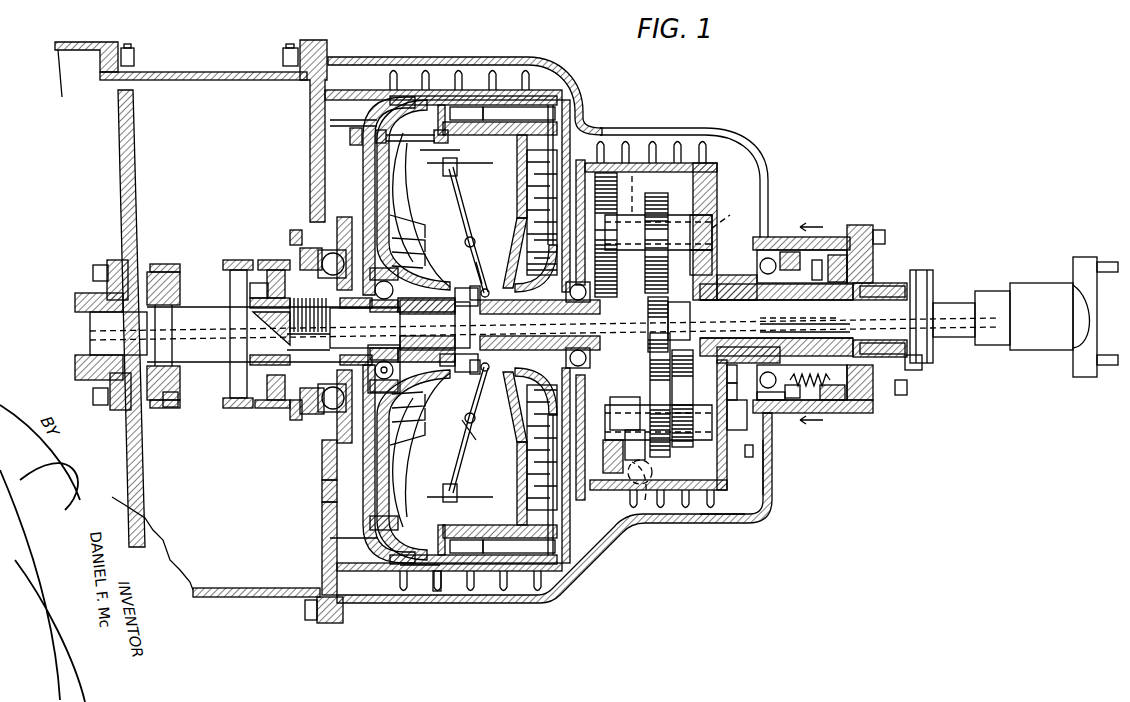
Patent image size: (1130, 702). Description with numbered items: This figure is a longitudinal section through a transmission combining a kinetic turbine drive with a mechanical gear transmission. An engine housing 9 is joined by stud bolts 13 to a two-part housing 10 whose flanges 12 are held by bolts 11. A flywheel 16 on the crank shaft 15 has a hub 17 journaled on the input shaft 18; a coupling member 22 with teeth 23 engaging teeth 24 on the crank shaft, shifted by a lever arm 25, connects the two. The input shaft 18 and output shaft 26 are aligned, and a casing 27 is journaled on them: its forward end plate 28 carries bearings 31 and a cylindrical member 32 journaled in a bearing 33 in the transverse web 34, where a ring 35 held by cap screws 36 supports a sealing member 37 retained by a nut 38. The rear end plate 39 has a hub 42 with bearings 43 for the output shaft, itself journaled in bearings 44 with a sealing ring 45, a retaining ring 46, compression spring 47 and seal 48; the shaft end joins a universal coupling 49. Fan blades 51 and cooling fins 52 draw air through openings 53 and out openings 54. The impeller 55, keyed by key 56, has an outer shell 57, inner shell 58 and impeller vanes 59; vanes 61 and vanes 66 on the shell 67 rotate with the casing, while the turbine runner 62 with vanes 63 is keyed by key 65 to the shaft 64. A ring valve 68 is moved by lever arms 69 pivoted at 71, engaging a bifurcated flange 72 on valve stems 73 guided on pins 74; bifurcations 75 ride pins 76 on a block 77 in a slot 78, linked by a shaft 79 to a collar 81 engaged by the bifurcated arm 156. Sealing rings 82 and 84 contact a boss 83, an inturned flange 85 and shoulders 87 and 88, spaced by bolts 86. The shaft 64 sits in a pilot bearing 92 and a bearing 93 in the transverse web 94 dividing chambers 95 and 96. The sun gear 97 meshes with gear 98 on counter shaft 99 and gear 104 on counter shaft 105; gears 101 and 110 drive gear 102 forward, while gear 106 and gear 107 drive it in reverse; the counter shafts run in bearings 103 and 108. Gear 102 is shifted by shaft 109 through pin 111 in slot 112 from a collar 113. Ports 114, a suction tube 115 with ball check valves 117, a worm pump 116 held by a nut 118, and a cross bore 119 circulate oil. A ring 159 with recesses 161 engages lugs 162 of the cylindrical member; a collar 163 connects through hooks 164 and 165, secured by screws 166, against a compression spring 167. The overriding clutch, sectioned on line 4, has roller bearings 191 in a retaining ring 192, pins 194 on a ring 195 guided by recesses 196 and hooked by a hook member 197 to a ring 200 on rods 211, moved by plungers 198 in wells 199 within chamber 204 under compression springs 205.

The engine housing 9 is at (87, 42).
The housing 10 is at (180, 72).
The bolts 11 is at (290, 48).
The flanges 12 is at (313, 40).
The stud bolts 13 is at (134, 48).
The crank shaft 15 is at (80, 295).
The flywheel 16 is at (134, 190).
The hub 17 is at (118, 260).
The input shaft 18 is at (200, 365).
The coupling member 22 is at (176, 285).
The teeth 23 is at (150, 405).
The teeth 24 is at (93, 272).
The lever arm 25 is at (173, 407).
The output shaft 26 is at (962, 303).
The casing 27 is at (590, 566).
The forward end plate 28 is at (382, 604).
The bearings 31 is at (375, 392).
The cylindrical member 32 is at (366, 430).
The bearing 33 is at (338, 440).
The transverse web 34 is at (325, 470).
The ring 35 is at (320, 415).
The cap screws 36 is at (292, 232).
The sealing member 37 is at (305, 410).
The nut 38 is at (290, 410).
The rear end plate 39 is at (750, 518).
The hub 42 is at (855, 322).
The bearings 43 is at (726, 306).
The bearings 44 is at (763, 240).
The sealing ring 45 is at (880, 283).
The retaining ring 46 is at (922, 365).
The compression spring 47 is at (896, 300).
The seal 48 is at (892, 288).
The universal coupling 49 is at (1085, 377).
The fan blades 51 is at (330, 548).
The cooling fins 52 is at (438, 592).
The openings 53 is at (325, 492).
The openings 54 is at (772, 485).
The impeller 55 is at (420, 571).
The key 56 is at (479, 268).
The outer shell 57 is at (380, 165).
The inner shell 58 is at (395, 186).
The impeller vanes 59 is at (370, 200).
The vanes 61 is at (466, 107).
The turbine runner 62 is at (562, 88).
The vanes 63 is at (512, 107).
The shaft 64 is at (512, 372).
The key 65 is at (475, 244).
The vanes 66 is at (527, 176).
The shell 67 is at (517, 200).
The ring valve 68 is at (370, 523).
The lever arm 69 is at (464, 450).
The pivot 71 is at (471, 428).
The bifurcated flange 72 is at (460, 492).
The valve stem 73 is at (445, 555).
The pin 74 is at (488, 553).
The bifurcations 75 is at (474, 292).
The pins 76 is at (486, 290).
The block 77 is at (462, 372).
The slot 78 is at (447, 366).
The shaft 79 is at (262, 408).
The collar 81 is at (230, 285).
The sealing ring 82 is at (350, 136).
The boss 83 is at (330, 121).
The sealing ring 84 is at (442, 105).
The inturned flange 85 is at (448, 138).
The bolts 86 is at (412, 135).
The shoulder 87 is at (381, 130).
The shoulder 88 is at (460, 150).
The pilot bearing 92 is at (480, 372).
The bearing 93 is at (542, 257).
The transverse web 94 is at (542, 233).
The chamber 95 is at (458, 170).
The chamber 96 is at (659, 232).
The sun gear 97 is at (664, 300).
The gear 98 is at (610, 173).
The counter shaft 99 is at (695, 163).
The gear 101 is at (652, 193).
The gear 102 is at (712, 262).
The bearings 103 is at (730, 215).
The gear 104 is at (613, 473).
The counter shaft 105 is at (770, 413).
The gear 106 is at (668, 457).
The gear 107 is at (729, 397).
The bearings 108 is at (749, 457).
The shaft 109 is at (772, 320).
The gear 110 is at (684, 447).
The pin 111 is at (680, 310).
The slot 112 is at (730, 385).
The collar 113 is at (933, 280).
The ports 114 is at (600, 173).
The suction tube 115 is at (633, 460).
The worm pump 116 is at (542, 447).
The ball check valves 117 is at (634, 176).
The nut 118 is at (487, 372).
The cross bore 119 is at (466, 297).
The bifurcated arm 156 is at (228, 408).
The ring 159 is at (342, 252).
The recesses 161 is at (340, 232).
The lugs 162 is at (303, 252).
The collar 163 is at (272, 400).
The hook 164 is at (285, 275).
The hook 165 is at (262, 292).
The screws 166 is at (272, 262).
The compression spring 167 is at (365, 316).
The roller bearings 191 is at (790, 252).
The retaining ring 192 is at (808, 388).
The pin 194 is at (738, 425).
The ring 195 is at (817, 260).
The recesses 196 is at (792, 398).
The hook member 197 is at (840, 255).
The plungers 198 is at (905, 395).
The wells 199 is at (838, 400).
The ring 200 is at (853, 225).
The chamber 204 is at (885, 232).
The compression springs 205 is at (860, 413).
The rods 211 is at (893, 413).
The section line 4— 4 is at (811, 323).